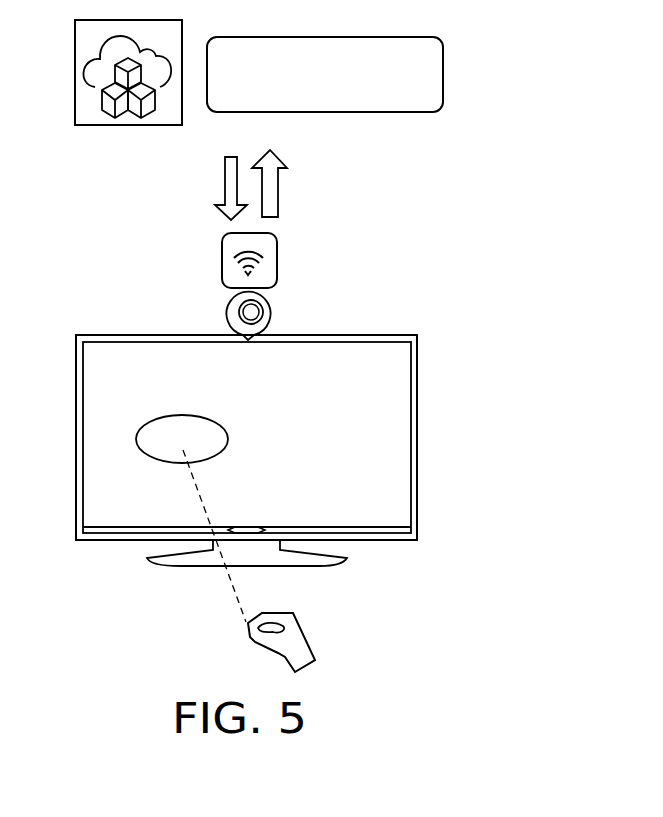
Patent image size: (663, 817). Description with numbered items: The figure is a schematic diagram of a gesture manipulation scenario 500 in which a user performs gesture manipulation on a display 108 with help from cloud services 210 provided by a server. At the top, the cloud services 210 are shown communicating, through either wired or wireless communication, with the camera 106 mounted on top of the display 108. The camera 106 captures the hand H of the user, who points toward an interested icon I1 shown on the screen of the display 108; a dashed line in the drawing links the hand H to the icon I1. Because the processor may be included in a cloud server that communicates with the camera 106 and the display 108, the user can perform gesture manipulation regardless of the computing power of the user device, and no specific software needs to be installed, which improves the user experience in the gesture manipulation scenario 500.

The cloud services 210 is at (350, 36).
The camera 106 is at (271, 307).
The display 108 is at (392, 335).
The interested icon I1 is at (212, 417).
The hand H is at (308, 628).
The gesture manipulation scenario 500 is at (542, 673).